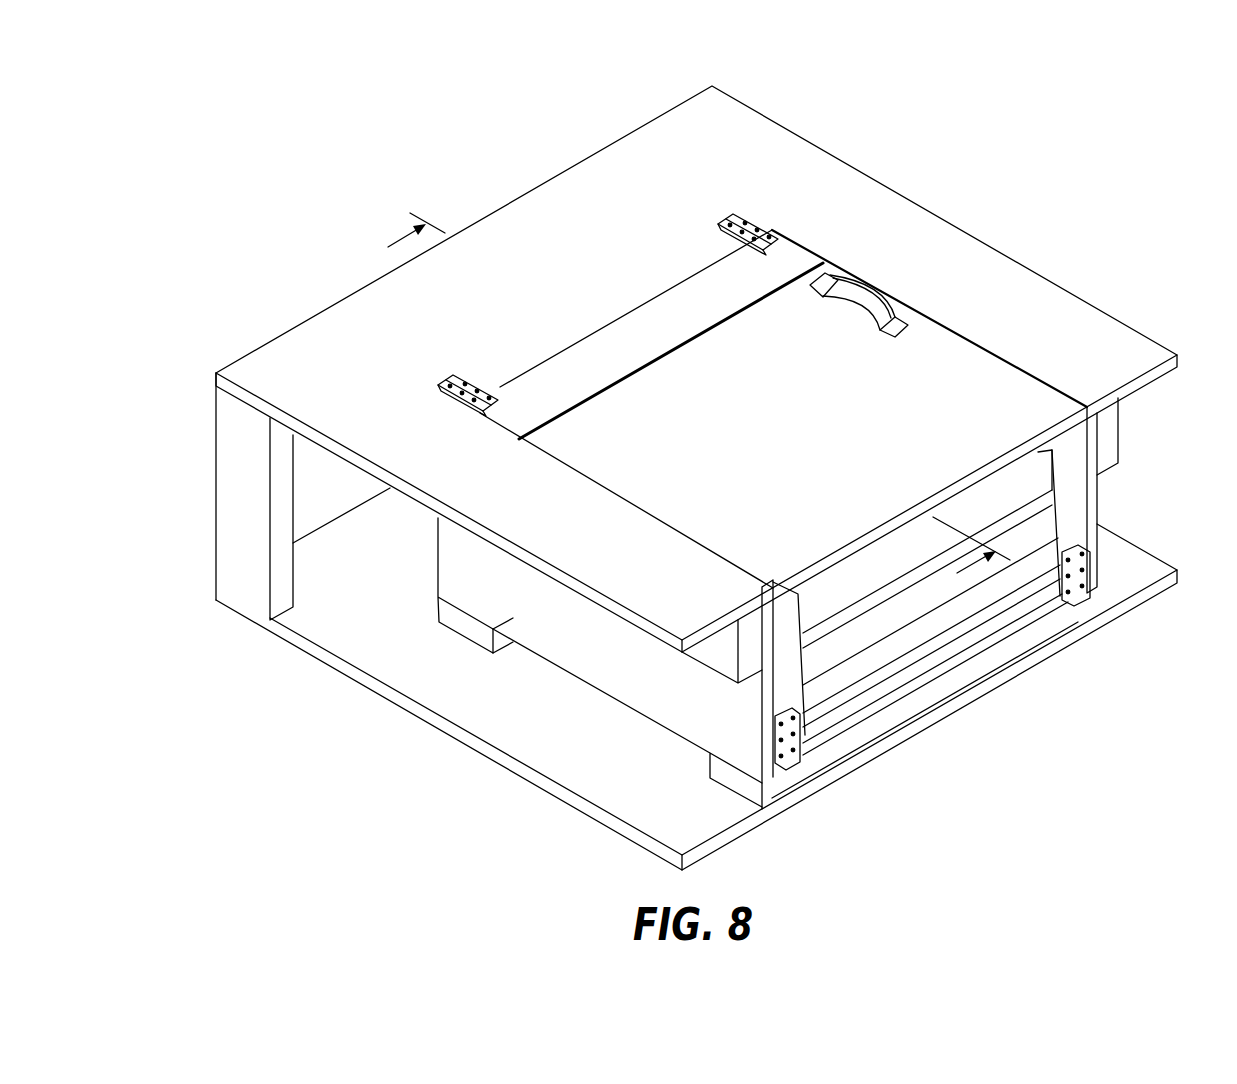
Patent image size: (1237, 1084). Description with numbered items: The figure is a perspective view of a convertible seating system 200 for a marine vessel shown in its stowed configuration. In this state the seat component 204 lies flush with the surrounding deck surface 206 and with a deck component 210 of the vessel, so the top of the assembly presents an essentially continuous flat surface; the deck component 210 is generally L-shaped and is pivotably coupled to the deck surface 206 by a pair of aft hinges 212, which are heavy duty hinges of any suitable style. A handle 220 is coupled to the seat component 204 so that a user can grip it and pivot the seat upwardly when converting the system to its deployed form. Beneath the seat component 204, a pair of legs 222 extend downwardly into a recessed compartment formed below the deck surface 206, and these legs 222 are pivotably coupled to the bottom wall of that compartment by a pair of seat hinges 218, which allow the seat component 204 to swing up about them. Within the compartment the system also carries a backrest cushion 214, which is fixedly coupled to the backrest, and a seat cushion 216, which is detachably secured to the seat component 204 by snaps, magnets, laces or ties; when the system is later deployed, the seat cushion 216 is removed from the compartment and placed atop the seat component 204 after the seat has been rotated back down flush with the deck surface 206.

The convertible seating system 200 is at (366, 158).
The seat component 204 is at (980, 403).
The deck surface 206 is at (657, 170).
The deck component 210 is at (790, 260).
The aft hinges 212 is at (437, 387).
The backrest cushion 214 is at (833, 595).
The seat cushion 216 is at (957, 615).
The seat hinges 218 is at (805, 730).
The handle 220 is at (870, 290).
The legs 222 is at (1070, 503).